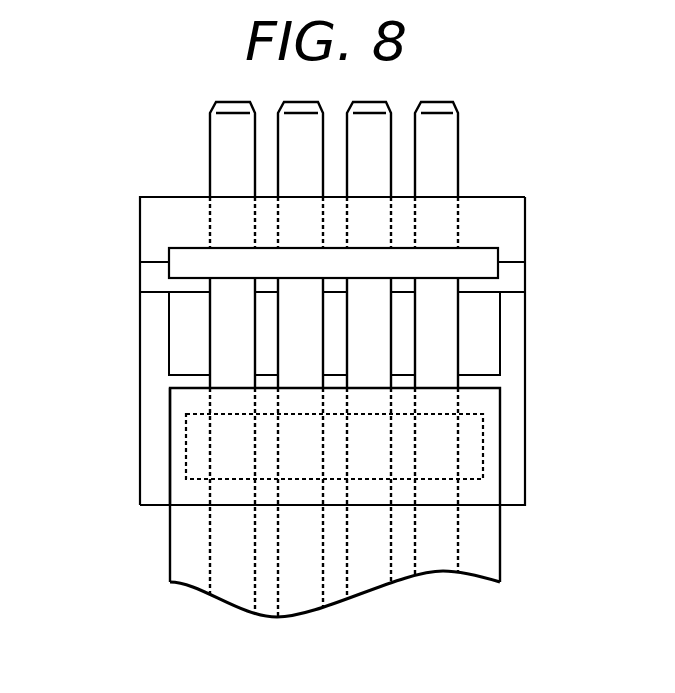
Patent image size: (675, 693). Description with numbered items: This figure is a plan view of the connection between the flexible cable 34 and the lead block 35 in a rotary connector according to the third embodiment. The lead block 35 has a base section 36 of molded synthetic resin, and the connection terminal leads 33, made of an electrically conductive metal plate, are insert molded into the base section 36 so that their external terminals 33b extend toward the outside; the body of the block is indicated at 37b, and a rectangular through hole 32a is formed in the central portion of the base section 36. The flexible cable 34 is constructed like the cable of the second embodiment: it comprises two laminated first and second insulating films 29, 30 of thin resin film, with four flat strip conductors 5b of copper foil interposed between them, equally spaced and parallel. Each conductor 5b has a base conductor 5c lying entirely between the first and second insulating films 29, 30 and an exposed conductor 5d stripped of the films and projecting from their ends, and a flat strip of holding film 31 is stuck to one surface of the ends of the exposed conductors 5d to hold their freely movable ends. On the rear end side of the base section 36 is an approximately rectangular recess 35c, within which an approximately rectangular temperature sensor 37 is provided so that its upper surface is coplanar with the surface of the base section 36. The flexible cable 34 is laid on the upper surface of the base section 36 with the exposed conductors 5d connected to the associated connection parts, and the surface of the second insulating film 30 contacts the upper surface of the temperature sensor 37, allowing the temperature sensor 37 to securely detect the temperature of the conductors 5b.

The connection terminal leads 33 is at (222, 142).
The external terminals 33b is at (443, 142).
The housing body 37b is at (511, 214).
The holding film 31 is at (485, 265).
The rectangular through hole 32a is at (190, 348).
The exposed conductor 5d is at (447, 320).
The lead block 35 is at (140, 398).
The base section 36 is at (526, 397).
The flexible cable 34 is at (168, 477).
The rectangular recess 35c is at (484, 445).
The temperature sensor 37 is at (472, 467).
The conductors 5b is at (225, 552).
The first insulating film 29 is at (387, 604).
The second insulating film 30 is at (388, 594).
The base conductor 5c is at (227, 588).